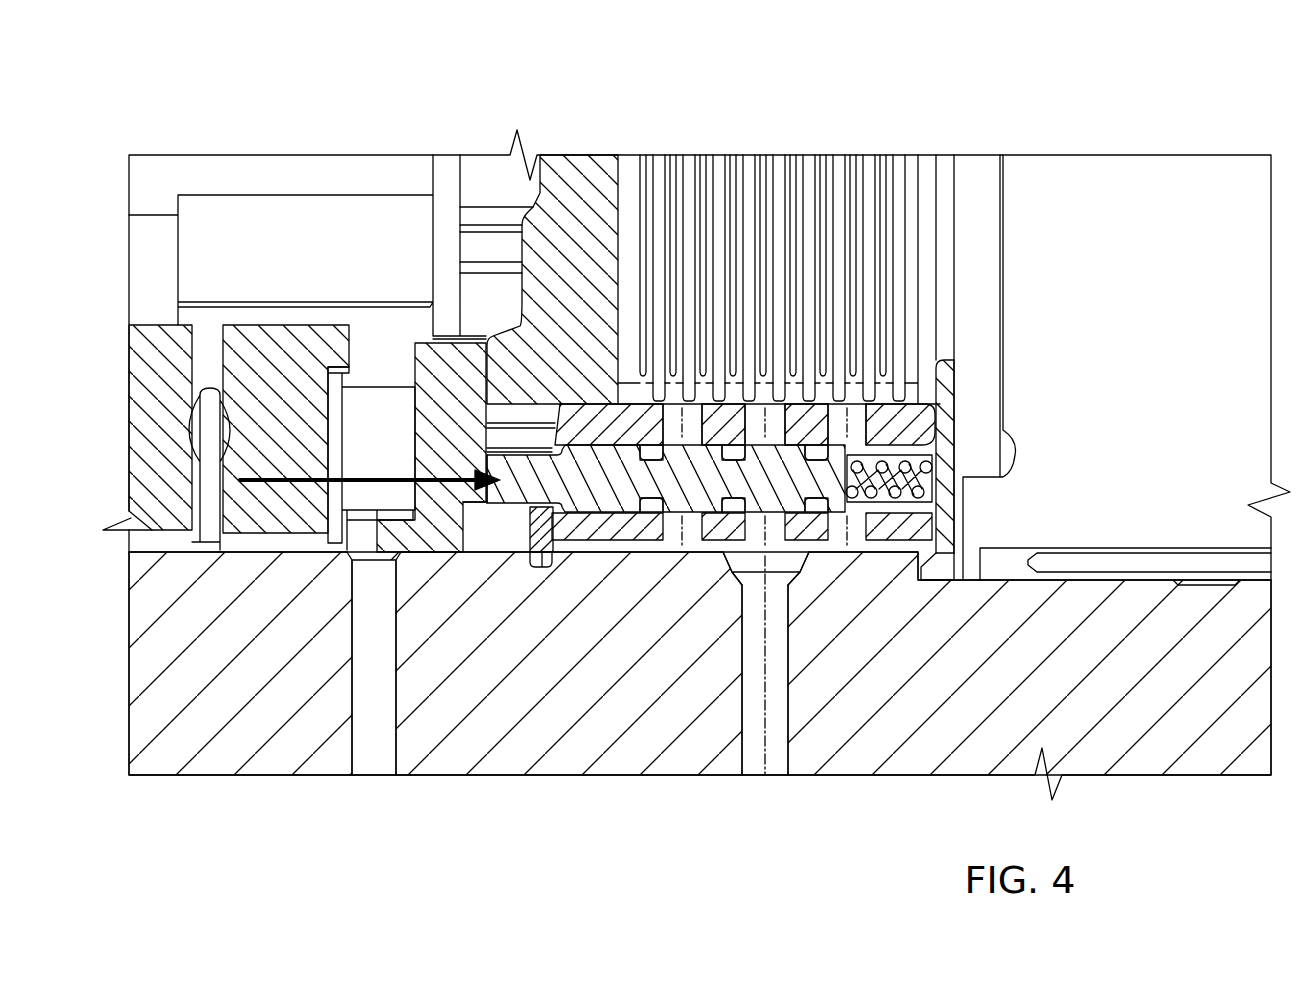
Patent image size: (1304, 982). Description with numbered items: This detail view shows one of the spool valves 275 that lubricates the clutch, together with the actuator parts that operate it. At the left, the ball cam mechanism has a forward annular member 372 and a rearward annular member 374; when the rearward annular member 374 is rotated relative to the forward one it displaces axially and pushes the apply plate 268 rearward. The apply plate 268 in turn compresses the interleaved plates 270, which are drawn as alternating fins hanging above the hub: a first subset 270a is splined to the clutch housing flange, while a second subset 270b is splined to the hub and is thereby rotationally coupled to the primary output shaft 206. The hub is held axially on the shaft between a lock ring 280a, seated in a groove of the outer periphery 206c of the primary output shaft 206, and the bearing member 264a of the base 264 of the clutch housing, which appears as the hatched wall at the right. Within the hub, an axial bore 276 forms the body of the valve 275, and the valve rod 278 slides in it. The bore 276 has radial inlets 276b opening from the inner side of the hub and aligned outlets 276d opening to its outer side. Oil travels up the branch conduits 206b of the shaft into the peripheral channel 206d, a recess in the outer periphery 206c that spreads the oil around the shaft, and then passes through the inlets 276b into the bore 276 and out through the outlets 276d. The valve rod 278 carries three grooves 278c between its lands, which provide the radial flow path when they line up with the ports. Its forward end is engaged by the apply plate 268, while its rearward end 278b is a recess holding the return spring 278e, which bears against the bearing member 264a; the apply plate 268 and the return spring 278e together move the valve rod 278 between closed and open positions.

The forward annular member 372 is at (150, 340).
The rearward annular member 374 is at (313, 335).
The apply plate 268 is at (563, 187).
The bore 276 is at (587, 413).
The interleaved plates 270 is at (772, 246).
The first subset of interleaved plates 270a is at (748, 187).
The second subset of interleaved plates 270b is at (800, 205).
The base 264 is at (946, 190).
The bearing member 264a is at (943, 381).
The valve 275 is at (983, 390).
The outlets 276d is at (845, 418).
The valve rod 278 is at (559, 634).
The rearward end 278b is at (900, 538).
The grooves 278c is at (652, 512).
The return spring 278e is at (887, 507).
The inlets 276b is at (682, 548).
The lock ring 280a is at (541, 553).
The primary output shaft 206 is at (1117, 740).
The branch conduits 206b is at (753, 762).
The outer periphery 206c is at (546, 567).
The peripheral channel 206d is at (803, 575).